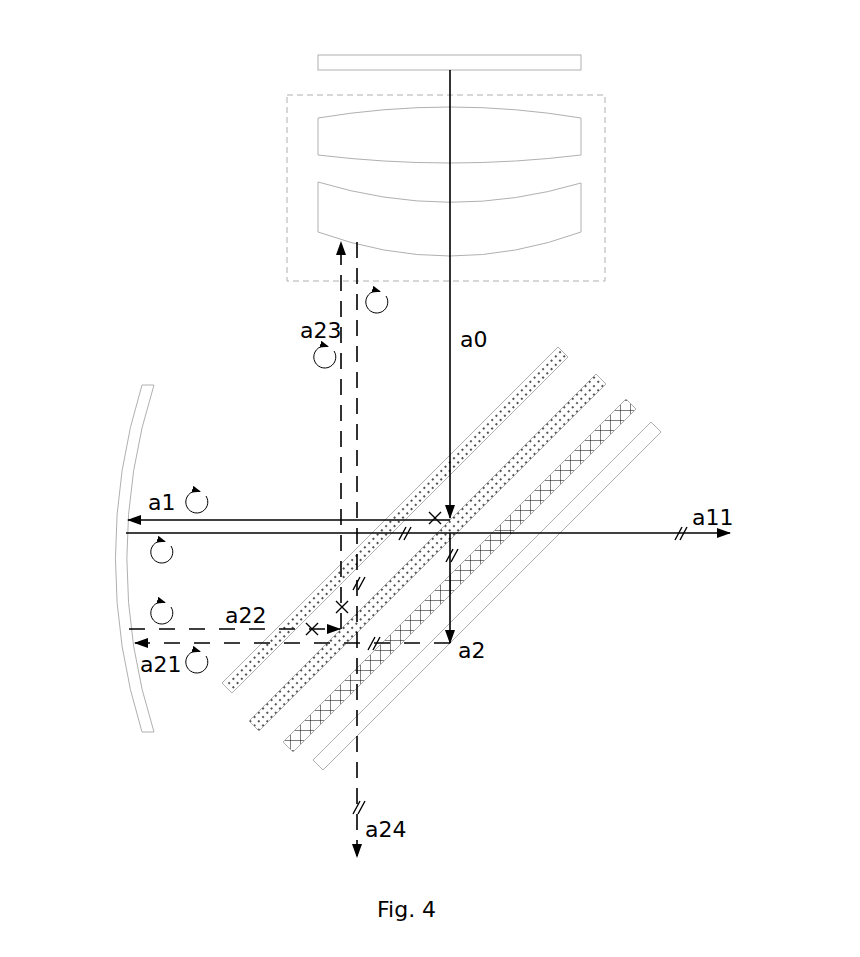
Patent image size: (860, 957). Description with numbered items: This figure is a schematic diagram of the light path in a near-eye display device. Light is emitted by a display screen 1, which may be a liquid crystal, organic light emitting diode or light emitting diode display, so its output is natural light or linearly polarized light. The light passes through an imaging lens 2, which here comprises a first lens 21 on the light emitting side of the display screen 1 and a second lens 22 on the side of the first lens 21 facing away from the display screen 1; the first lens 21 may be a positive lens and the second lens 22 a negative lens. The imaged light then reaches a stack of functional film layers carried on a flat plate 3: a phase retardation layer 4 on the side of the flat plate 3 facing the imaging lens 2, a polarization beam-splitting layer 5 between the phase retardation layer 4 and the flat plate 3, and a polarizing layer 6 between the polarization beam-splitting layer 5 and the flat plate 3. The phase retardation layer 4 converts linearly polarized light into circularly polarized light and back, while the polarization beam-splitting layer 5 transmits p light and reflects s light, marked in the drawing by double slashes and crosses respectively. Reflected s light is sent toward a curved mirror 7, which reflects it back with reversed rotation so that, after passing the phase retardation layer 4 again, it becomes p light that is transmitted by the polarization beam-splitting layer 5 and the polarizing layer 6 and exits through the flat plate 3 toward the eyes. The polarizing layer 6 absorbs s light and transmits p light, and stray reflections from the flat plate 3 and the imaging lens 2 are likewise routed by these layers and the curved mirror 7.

The display screen 1 is at (318, 60).
The imaging lens 2 is at (452, 188).
The first lens 21 is at (318, 137).
The second lens 22 is at (318, 207).
The flat plate 3 is at (612, 485).
The phase retardation layer 4 is at (566, 352).
The polarization beam-splitting layer 5 is at (604, 378).
The polarizing layer 6 is at (637, 404).
The curved mirror 7 is at (130, 425).